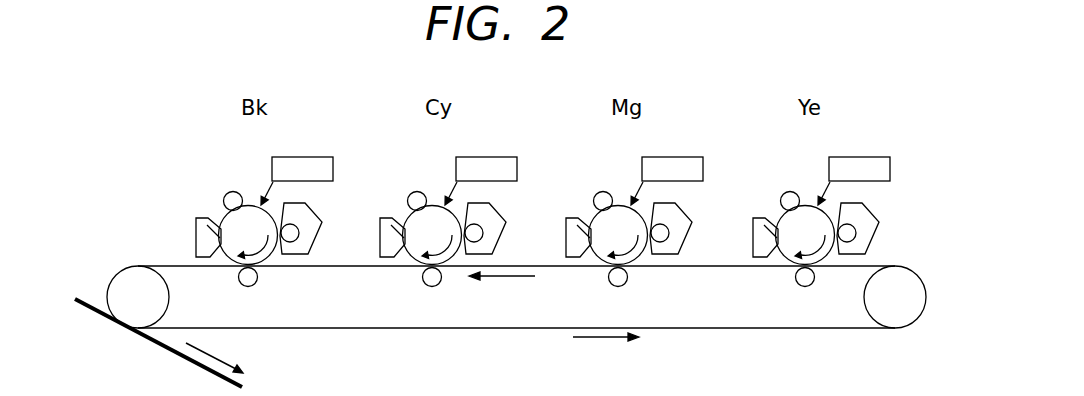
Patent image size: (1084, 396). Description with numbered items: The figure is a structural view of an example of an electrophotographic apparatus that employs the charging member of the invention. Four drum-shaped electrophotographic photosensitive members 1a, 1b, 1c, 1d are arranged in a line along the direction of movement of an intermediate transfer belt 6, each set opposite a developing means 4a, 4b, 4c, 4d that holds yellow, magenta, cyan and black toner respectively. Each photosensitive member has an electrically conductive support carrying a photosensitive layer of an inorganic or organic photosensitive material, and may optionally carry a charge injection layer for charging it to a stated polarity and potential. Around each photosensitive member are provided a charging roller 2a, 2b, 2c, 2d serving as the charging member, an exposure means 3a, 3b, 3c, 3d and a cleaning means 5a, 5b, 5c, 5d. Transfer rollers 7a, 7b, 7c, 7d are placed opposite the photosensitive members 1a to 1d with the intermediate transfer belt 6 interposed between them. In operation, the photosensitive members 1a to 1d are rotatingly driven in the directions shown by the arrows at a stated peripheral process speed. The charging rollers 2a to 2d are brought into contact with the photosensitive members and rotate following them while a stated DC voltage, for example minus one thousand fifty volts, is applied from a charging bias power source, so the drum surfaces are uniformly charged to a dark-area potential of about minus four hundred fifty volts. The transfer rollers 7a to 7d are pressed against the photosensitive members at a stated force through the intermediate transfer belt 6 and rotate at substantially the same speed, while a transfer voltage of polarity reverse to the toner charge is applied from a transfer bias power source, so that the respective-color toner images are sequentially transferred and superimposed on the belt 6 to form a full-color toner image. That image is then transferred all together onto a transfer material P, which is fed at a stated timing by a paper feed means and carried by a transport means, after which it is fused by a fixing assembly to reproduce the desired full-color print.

The photosensitive member 1a is at (782, 216).
The photosensitive member 1b is at (592, 216).
The photosensitive member 1c is at (406, 216).
The photosensitive member 1d is at (221, 224).
The charging roller 2a is at (779, 172).
The charging roller 2b is at (592, 172).
The charging roller 2c is at (406, 172).
The charging roller 2d is at (230, 190).
The exposure means 3a is at (854, 159).
The exposure means 3b is at (667, 159).
The exposure means 3c is at (481, 159).
The exposure means 3d is at (303, 157).
The developing means 4a is at (875, 221).
The developing means 4b is at (689, 221).
The developing means 4c is at (502, 221).
The developing means 4d is at (317, 211).
The cleaning means 5a is at (741, 237).
The cleaning means 5b is at (554, 237).
The cleaning means 5c is at (368, 237).
The cleaning means 5d is at (196, 233).
The intermediate transfer belt 6 is at (751, 329).
The transfer roller 7a is at (830, 292).
The transfer roller 7b is at (647, 292).
The transfer roller 7c is at (460, 292).
The transfer roller 7d is at (257, 282).
The transfer material P is at (159, 343).